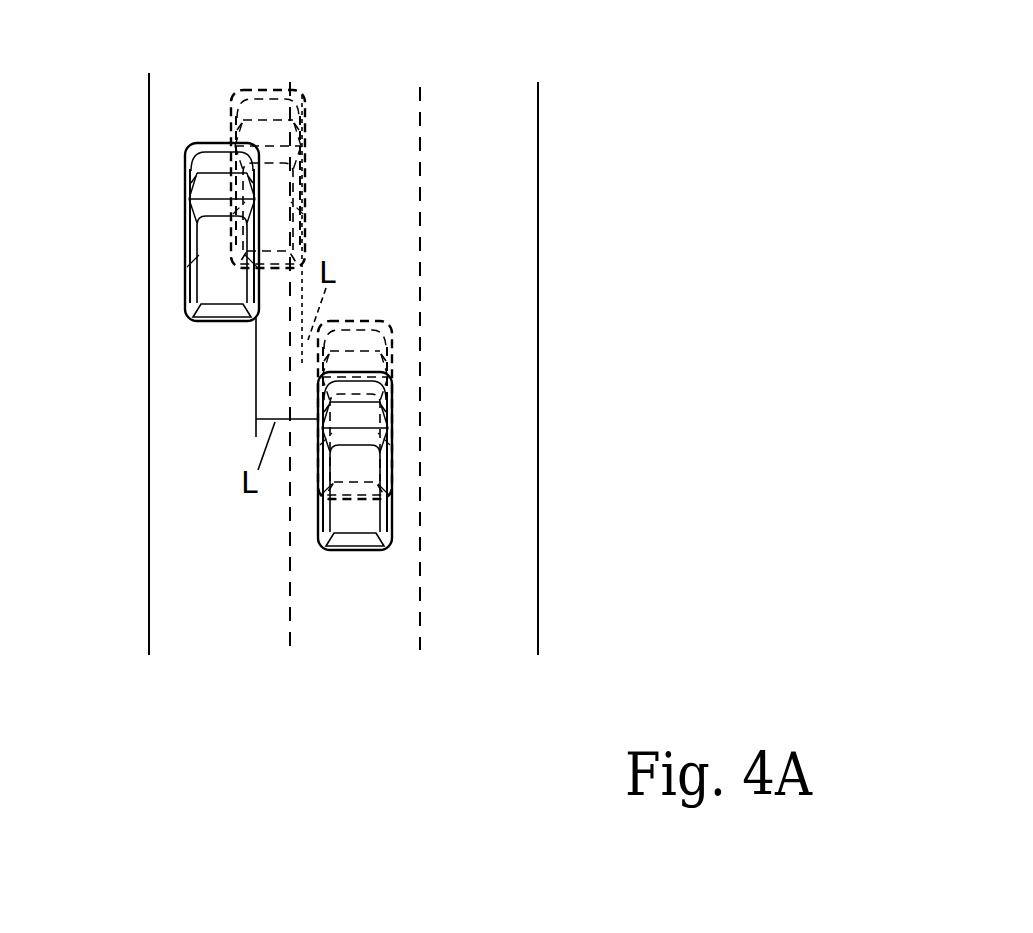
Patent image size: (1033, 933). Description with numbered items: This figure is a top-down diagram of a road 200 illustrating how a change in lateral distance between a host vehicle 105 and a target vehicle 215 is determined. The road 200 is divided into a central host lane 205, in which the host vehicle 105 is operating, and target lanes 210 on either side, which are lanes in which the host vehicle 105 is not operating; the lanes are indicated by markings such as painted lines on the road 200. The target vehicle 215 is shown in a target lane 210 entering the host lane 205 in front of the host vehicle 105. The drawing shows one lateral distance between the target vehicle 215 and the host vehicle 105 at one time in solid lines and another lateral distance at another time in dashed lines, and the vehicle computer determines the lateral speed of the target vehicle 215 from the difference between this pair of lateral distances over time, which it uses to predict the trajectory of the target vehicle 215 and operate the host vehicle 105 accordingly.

The road 200 is at (540, 95).
The host lane 205 is at (386, 604).
The target lane 210 is at (509, 604).
The target vehicle 215 is at (185, 185).
The host vehicle 105 is at (392, 455).